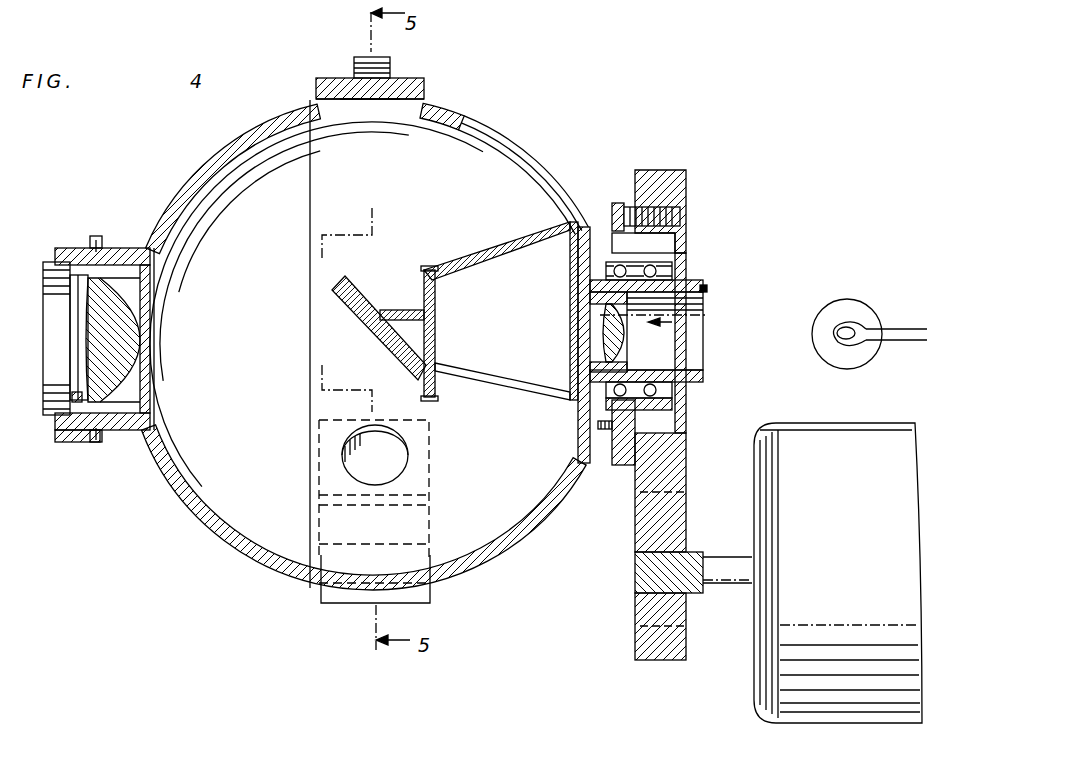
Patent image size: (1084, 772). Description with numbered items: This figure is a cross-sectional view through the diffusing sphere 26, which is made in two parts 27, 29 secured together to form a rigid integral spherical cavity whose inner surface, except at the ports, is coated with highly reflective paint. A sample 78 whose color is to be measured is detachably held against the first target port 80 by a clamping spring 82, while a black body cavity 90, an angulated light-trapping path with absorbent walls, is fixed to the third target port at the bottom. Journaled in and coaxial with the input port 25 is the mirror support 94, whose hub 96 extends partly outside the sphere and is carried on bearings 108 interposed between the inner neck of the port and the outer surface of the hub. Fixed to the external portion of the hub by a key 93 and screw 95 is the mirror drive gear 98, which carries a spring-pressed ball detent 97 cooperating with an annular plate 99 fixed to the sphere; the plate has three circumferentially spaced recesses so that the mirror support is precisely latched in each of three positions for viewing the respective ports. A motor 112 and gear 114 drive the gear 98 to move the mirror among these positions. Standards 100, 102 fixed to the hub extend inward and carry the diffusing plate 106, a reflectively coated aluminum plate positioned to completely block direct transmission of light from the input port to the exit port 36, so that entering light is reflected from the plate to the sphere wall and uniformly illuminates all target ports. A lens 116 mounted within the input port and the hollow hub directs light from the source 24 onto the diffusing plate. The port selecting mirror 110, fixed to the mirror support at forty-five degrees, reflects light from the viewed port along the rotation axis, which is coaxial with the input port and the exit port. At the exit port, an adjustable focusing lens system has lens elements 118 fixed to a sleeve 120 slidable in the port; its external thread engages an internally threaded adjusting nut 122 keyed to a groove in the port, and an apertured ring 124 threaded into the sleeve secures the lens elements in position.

The source 24 is at (858, 312).
The input port 25 is at (700, 312).
The diffusing sphere 26 is at (559, 128).
The first part of diffusing sphere 27 is at (228, 530).
The second part of diffusing sphere 29 is at (474, 560).
The exit port 36 is at (180, 313).
The sample 78 is at (402, 79).
The first target port 80 is at (388, 100).
The clamping spring 82 is at (356, 60).
The black body cavity 90 is at (342, 604).
The key 93 is at (702, 378).
The mirror support 94 is at (501, 312).
The screw 95 is at (700, 285).
The hub 96 is at (592, 316).
The spring-pressed ball detent 97 is at (614, 208).
The mirror drive gear 98 is at (688, 456).
The annular plate 99 is at (622, 205).
The standard 100 is at (505, 248).
The standard 102 is at (530, 387).
The diffusing plate 106 is at (436, 312).
The bearings 108 is at (650, 382).
The port selecting mirror 110 is at (388, 350).
The motor 112 is at (826, 430).
The gear 114 is at (642, 634).
The lens 116 is at (604, 348).
The lens elements 118 is at (132, 355).
The sleeve 120 is at (138, 410).
The adjusting nut 122 is at (98, 444).
The apertured ring 124 is at (74, 396).